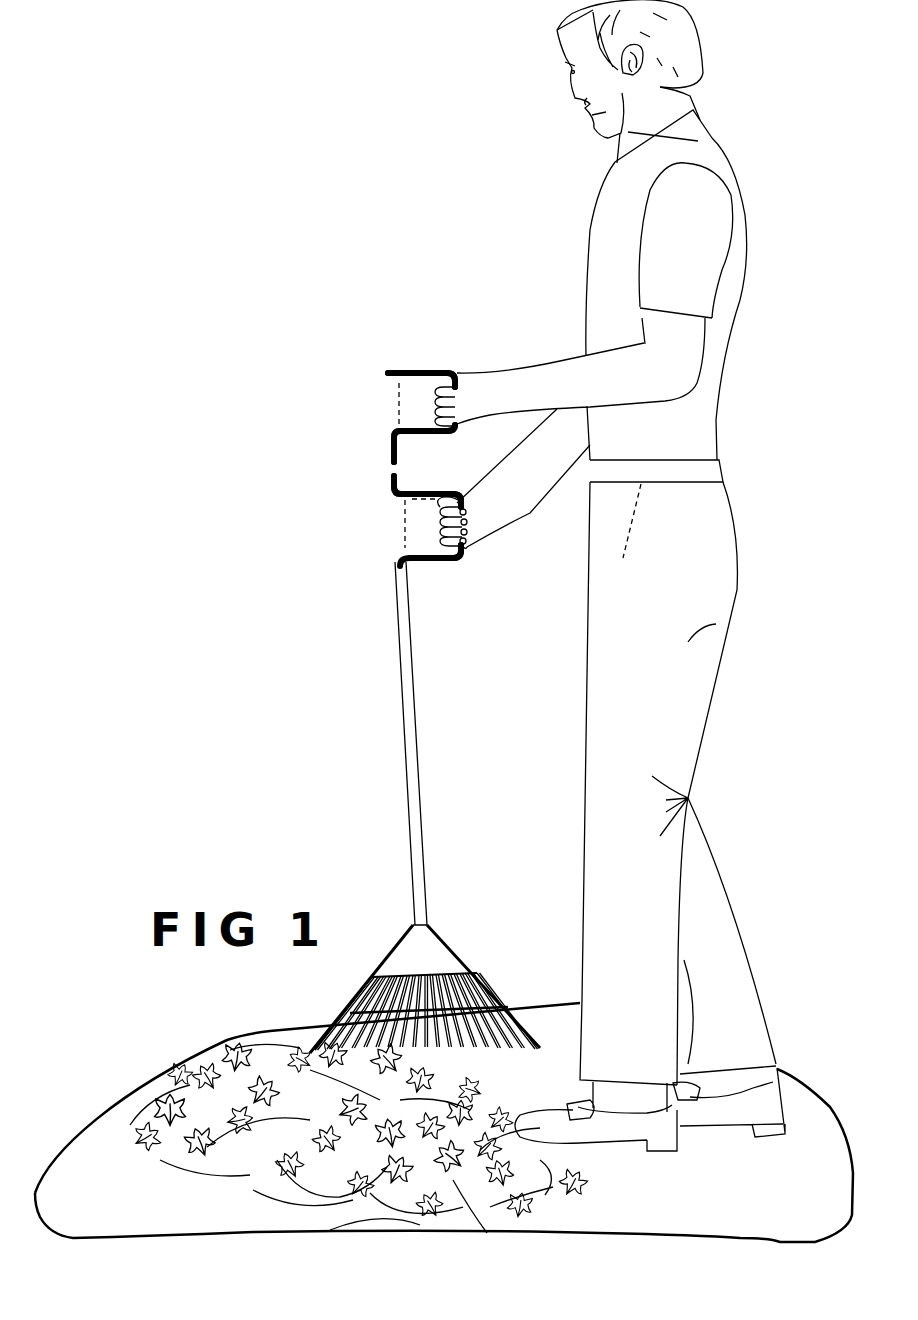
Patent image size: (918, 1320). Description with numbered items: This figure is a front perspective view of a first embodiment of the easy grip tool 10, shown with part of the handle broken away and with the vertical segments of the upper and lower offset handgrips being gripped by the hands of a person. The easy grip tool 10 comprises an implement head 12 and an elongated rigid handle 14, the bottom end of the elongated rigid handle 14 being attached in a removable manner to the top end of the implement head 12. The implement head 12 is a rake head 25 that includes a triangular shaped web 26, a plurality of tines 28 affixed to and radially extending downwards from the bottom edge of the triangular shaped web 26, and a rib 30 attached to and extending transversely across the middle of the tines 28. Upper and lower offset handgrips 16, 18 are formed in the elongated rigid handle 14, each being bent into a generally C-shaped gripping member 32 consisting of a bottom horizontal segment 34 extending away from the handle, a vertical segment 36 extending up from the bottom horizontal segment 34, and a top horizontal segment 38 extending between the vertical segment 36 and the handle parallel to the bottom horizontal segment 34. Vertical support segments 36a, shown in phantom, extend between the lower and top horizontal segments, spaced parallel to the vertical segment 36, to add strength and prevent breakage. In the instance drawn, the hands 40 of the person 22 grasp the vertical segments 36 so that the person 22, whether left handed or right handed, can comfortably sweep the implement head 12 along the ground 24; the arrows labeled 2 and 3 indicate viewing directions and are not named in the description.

The easy grip tool 10 is at (290, 397).
The view direction of FIG. 2 is at (374, 776).
The view direction of FIG. 3 is at (447, 724).
The implement head 12 is at (462, 943).
The elongated rigid handle 14 is at (384, 621).
The upper offset handgrip 16 is at (420, 360).
The lower offset handgrip 18 is at (463, 486).
The person 22 is at (585, 206).
The ground 24 is at (173, 1090).
The rake head 25 is at (478, 950).
The triangular shaped web 26 is at (398, 965).
The tines 28 is at (316, 1037).
The rib 30 is at (480, 990).
The C-shaped gripping member 32 is at (402, 358).
The bottom horizontal segment 34 is at (410, 432).
The vertical segment 36 is at (445, 358).
The vertical support segment 36a is at (388, 408).
The top horizontal segment 38 is at (393, 367).
The hands 40 is at (490, 388).